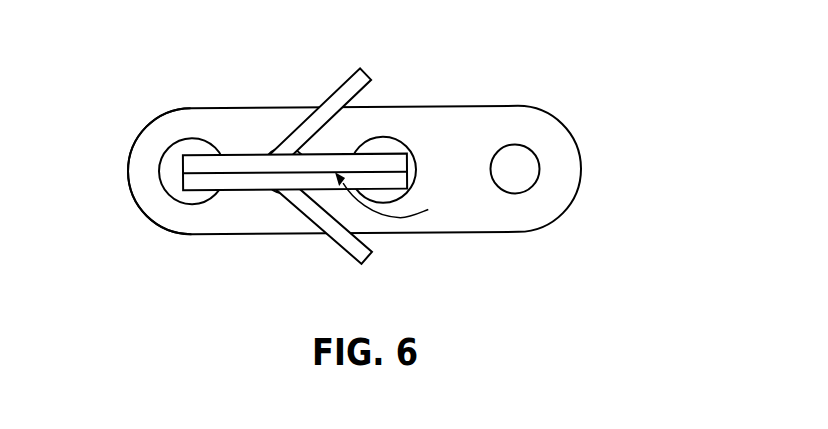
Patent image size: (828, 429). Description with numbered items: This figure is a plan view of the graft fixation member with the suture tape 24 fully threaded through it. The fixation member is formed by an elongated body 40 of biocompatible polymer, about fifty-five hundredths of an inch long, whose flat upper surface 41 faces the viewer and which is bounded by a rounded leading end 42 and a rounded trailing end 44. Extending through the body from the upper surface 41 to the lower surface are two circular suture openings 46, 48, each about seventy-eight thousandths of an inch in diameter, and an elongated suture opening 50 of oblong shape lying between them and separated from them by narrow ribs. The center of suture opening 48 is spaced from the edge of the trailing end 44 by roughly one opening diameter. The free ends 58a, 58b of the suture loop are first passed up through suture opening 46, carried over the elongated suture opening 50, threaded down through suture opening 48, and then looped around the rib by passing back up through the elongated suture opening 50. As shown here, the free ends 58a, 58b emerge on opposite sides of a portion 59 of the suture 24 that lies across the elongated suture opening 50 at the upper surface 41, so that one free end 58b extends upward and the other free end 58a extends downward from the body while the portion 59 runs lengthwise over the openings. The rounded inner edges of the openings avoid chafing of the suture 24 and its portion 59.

The suture tape 24 is at (230, 160).
The elongated body 40 is at (553, 127).
The upper surface 41 is at (472, 150).
The rounded leading end 42 is at (570, 163).
The rounded trailing end 44 is at (135, 172).
The suture opening 46 is at (387, 139).
The suture opening 48 is at (190, 201).
The elongated suture opening 50 is at (268, 148).
The free end 58a is at (368, 255).
The free end 58b is at (363, 80).
The portion of suture 59 is at (398, 196).